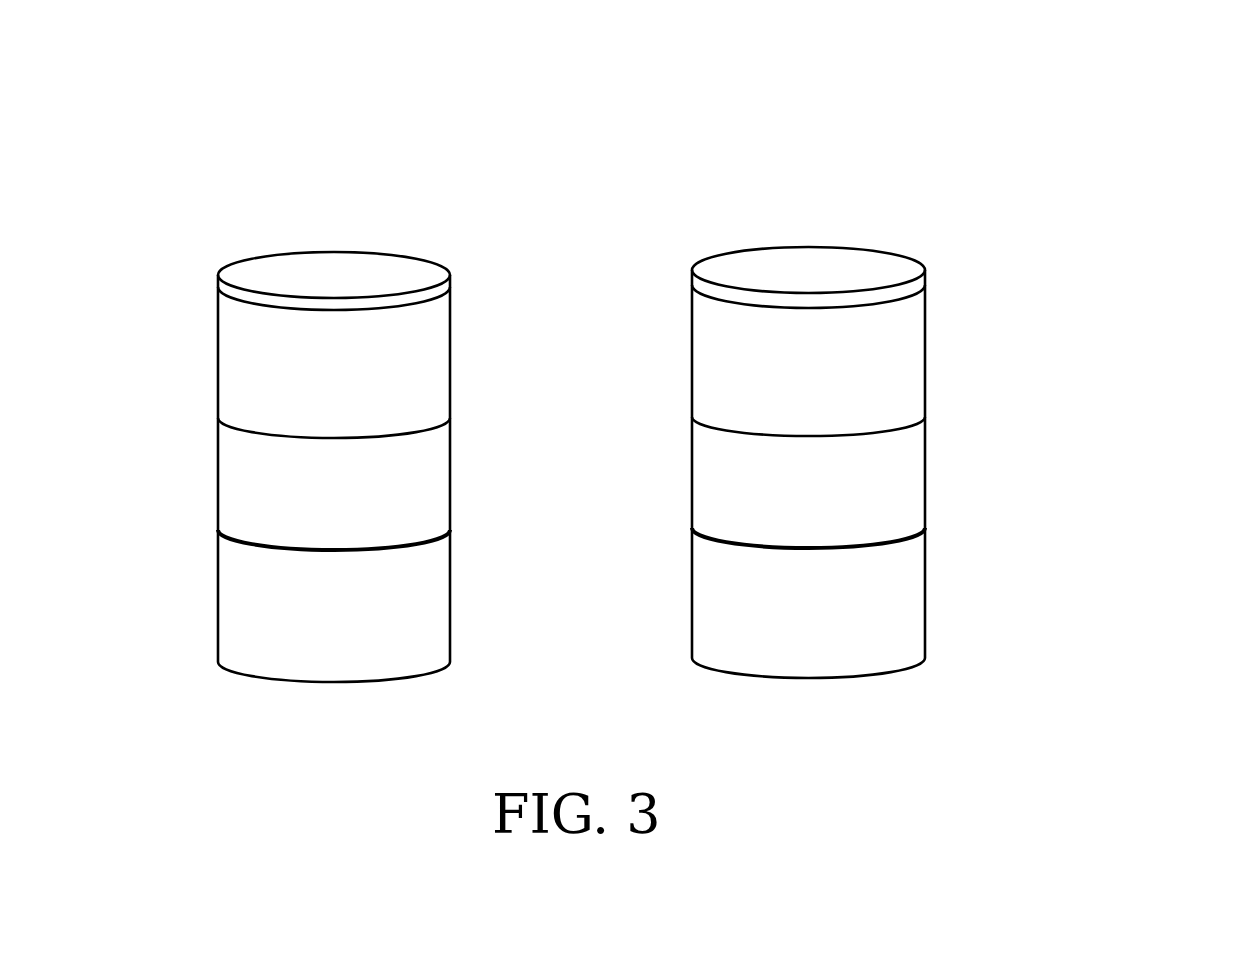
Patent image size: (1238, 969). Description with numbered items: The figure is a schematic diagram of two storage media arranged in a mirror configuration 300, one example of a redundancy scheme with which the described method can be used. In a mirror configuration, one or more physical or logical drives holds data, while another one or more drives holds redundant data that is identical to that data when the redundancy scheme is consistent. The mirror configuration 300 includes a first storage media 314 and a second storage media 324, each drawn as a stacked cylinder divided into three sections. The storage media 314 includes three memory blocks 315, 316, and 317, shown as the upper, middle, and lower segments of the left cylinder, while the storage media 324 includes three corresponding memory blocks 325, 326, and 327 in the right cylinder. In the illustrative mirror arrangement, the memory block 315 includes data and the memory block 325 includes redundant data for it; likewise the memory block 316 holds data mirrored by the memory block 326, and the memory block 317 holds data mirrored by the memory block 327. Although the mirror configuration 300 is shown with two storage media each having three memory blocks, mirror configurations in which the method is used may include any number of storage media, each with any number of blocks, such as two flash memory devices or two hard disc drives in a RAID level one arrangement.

The mirror configuration 300 is at (1097, 115).
The storage media 314 is at (335, 248).
The memory block 315 is at (217, 347).
The memory block 316 is at (218, 497).
The memory block 317 is at (218, 587).
The storage media 324 is at (810, 246).
The memory block 325 is at (925, 339).
The memory block 326 is at (925, 452).
The memory block 327 is at (925, 580).